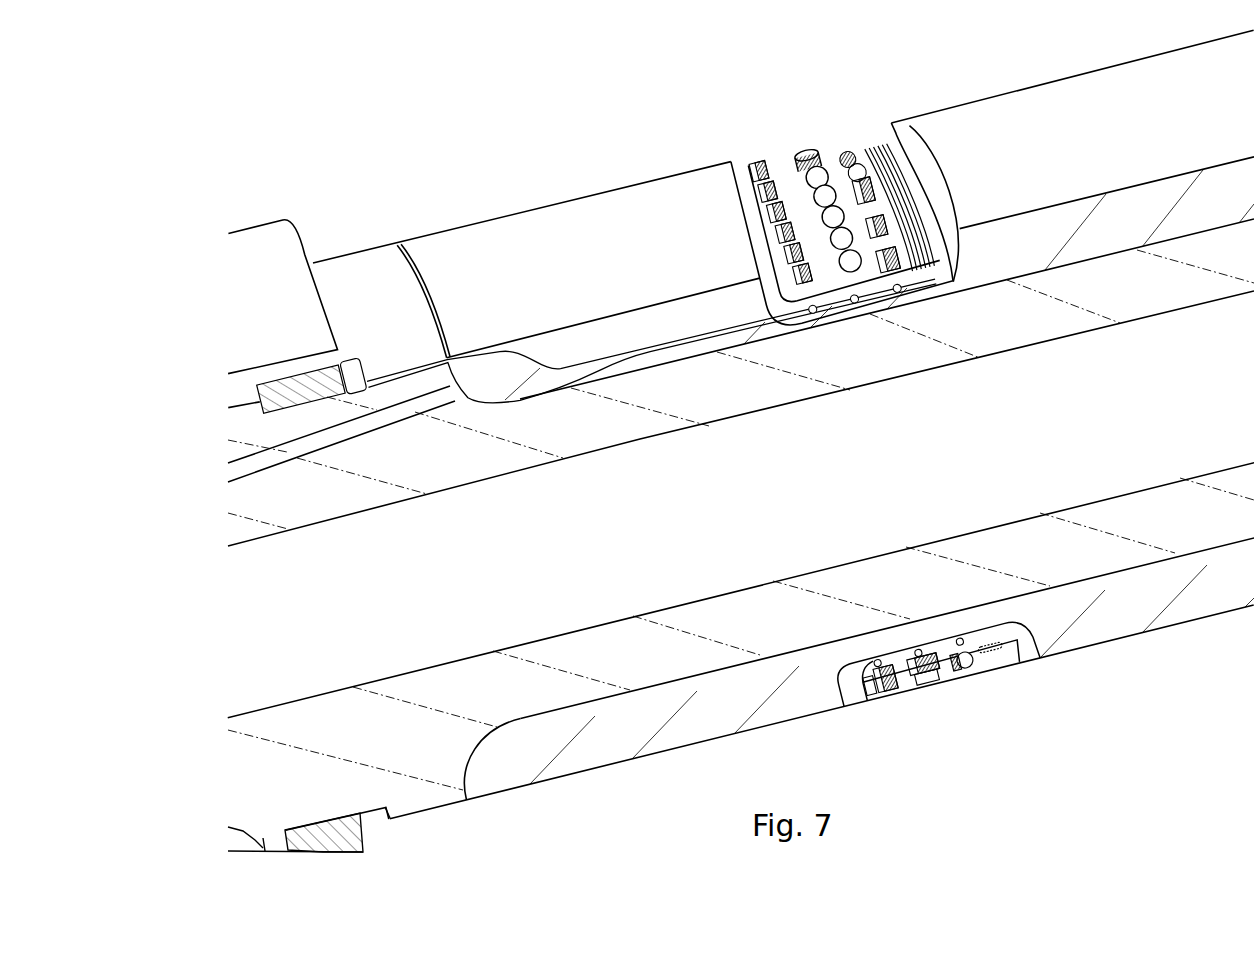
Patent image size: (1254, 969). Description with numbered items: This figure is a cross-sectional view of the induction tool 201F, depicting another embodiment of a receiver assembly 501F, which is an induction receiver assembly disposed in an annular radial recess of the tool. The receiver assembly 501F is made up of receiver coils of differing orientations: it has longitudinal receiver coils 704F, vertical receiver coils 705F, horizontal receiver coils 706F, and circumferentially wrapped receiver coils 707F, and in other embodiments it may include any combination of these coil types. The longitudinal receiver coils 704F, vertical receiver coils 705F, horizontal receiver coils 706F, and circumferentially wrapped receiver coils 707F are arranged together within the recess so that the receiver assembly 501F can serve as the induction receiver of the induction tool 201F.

The induction tool 201F is at (453, 176).
The receiver assembly 501F is at (851, 214).
The longitudinal receiver coils 704F is at (890, 693).
The vertical receiver coils 705F is at (937, 688).
The horizontal receiver coils 706F is at (967, 668).
The circumferentially wrapped receiver coils 707F is at (993, 654).